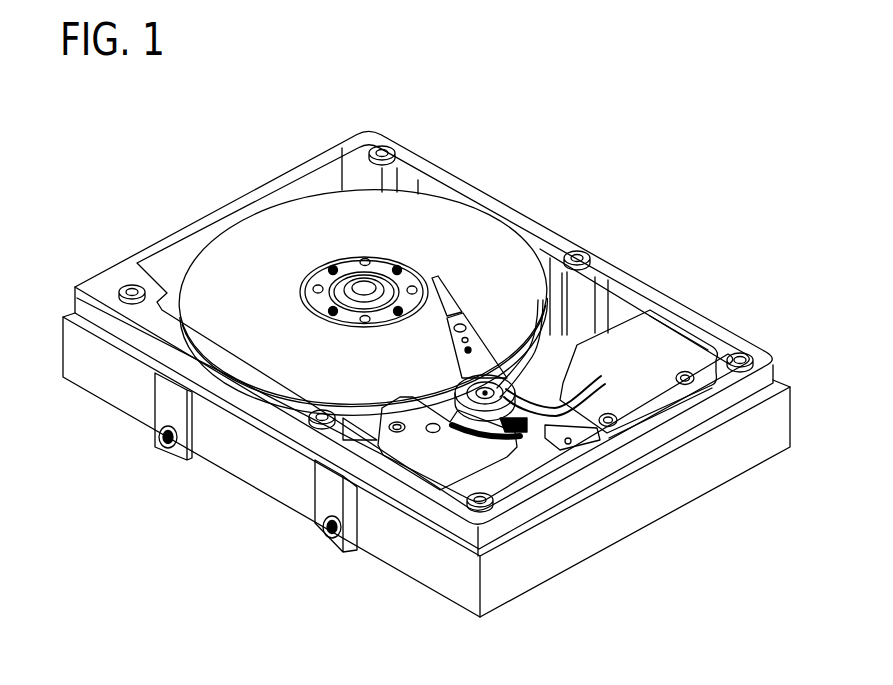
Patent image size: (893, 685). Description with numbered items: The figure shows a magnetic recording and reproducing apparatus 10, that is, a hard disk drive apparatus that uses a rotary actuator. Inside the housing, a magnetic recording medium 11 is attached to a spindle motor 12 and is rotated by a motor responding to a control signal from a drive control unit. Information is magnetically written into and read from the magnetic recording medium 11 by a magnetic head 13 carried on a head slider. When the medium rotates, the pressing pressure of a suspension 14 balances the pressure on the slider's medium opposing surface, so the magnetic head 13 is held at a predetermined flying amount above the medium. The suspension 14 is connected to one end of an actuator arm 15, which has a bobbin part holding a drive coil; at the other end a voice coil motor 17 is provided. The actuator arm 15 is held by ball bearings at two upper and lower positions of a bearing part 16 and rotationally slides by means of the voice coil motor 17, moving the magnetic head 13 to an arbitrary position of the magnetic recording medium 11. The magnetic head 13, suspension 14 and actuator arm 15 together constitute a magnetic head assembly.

The magnetic recording and reproducing apparatus 10 is at (121, 132).
The magnetic recording medium 11 is at (417, 235).
The spindle motor 12 is at (304, 289).
The magnetic head 13 is at (441, 283).
The suspension 14 is at (549, 350).
The actuator arm 15 is at (488, 330).
The bearing part 16 is at (460, 333).
The voice coil motor 17 is at (510, 440).